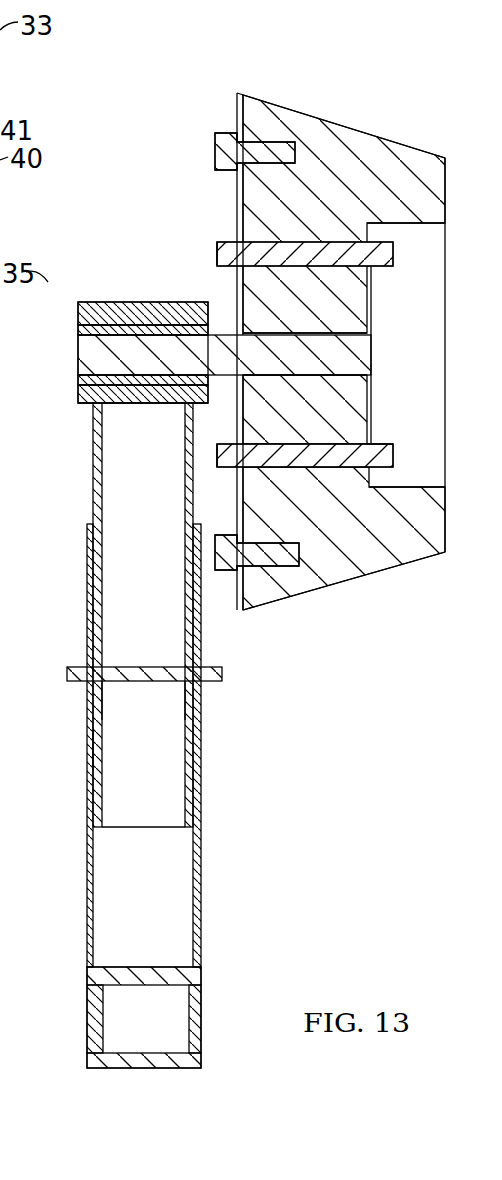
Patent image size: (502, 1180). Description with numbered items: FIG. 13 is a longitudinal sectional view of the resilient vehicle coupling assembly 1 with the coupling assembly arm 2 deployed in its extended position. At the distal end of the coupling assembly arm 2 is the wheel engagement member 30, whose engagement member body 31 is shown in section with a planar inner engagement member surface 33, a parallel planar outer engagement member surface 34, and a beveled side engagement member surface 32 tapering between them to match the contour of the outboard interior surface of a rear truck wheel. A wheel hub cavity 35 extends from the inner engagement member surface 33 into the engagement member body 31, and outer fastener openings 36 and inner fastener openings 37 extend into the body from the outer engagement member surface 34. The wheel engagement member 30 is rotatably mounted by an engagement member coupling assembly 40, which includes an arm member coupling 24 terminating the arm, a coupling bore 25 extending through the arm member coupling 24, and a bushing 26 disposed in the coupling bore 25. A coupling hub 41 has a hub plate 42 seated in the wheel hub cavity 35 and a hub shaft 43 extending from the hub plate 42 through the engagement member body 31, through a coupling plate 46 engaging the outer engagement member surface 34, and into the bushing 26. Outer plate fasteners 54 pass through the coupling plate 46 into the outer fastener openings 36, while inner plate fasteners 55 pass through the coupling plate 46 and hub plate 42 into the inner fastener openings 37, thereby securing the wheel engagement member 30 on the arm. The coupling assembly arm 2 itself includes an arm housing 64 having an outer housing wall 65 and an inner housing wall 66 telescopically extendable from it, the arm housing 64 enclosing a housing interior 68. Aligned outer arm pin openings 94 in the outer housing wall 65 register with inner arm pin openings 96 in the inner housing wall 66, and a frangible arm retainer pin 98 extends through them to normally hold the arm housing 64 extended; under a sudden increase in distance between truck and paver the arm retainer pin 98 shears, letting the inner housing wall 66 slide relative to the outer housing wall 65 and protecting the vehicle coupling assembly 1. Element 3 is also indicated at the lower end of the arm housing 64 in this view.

The vehicle coupling assembly 1 is at (141, 62).
The coupling assembly arm 2 is at (66, 543).
The cartridge base 3 is at (87, 1015).
The arm member coupling 24 is at (150, 302).
The coupling bore 25 is at (122, 342).
The bushing 26 is at (206, 288).
The wheel engagement member 30 is at (384, 580).
The engagement member body 31 is at (334, 142).
The side engagement member surface 32 is at (317, 597).
The inner engagement member surface 33 is at (445, 193).
The outer engagement member surface 34 is at (237, 112).
The wheel hub cavity 35 is at (404, 473).
The outer fastener openings 36 is at (275, 155).
The inner fastener openings 37 is at (377, 272).
The engagement member coupling assembly 40 is at (387, 324).
The coupling hub 41 is at (381, 298).
The hub plate 42 is at (373, 425).
The hub shaft 43 is at (288, 366).
The coupling plate 46 is at (237, 95).
The outer plate fasteners 54 is at (215, 142).
The inner plate fasteners 55 is at (215, 243).
The arm housing 64 is at (205, 728).
The outer housing wall 65 is at (203, 845).
The inner housing wall 66 is at (178, 828).
The housing interior 68 is at (105, 765).
The outer arm pin openings 94 is at (185, 700).
The inner arm pin openings 96 is at (179, 663).
The arm retainer pin 98 is at (68, 667).